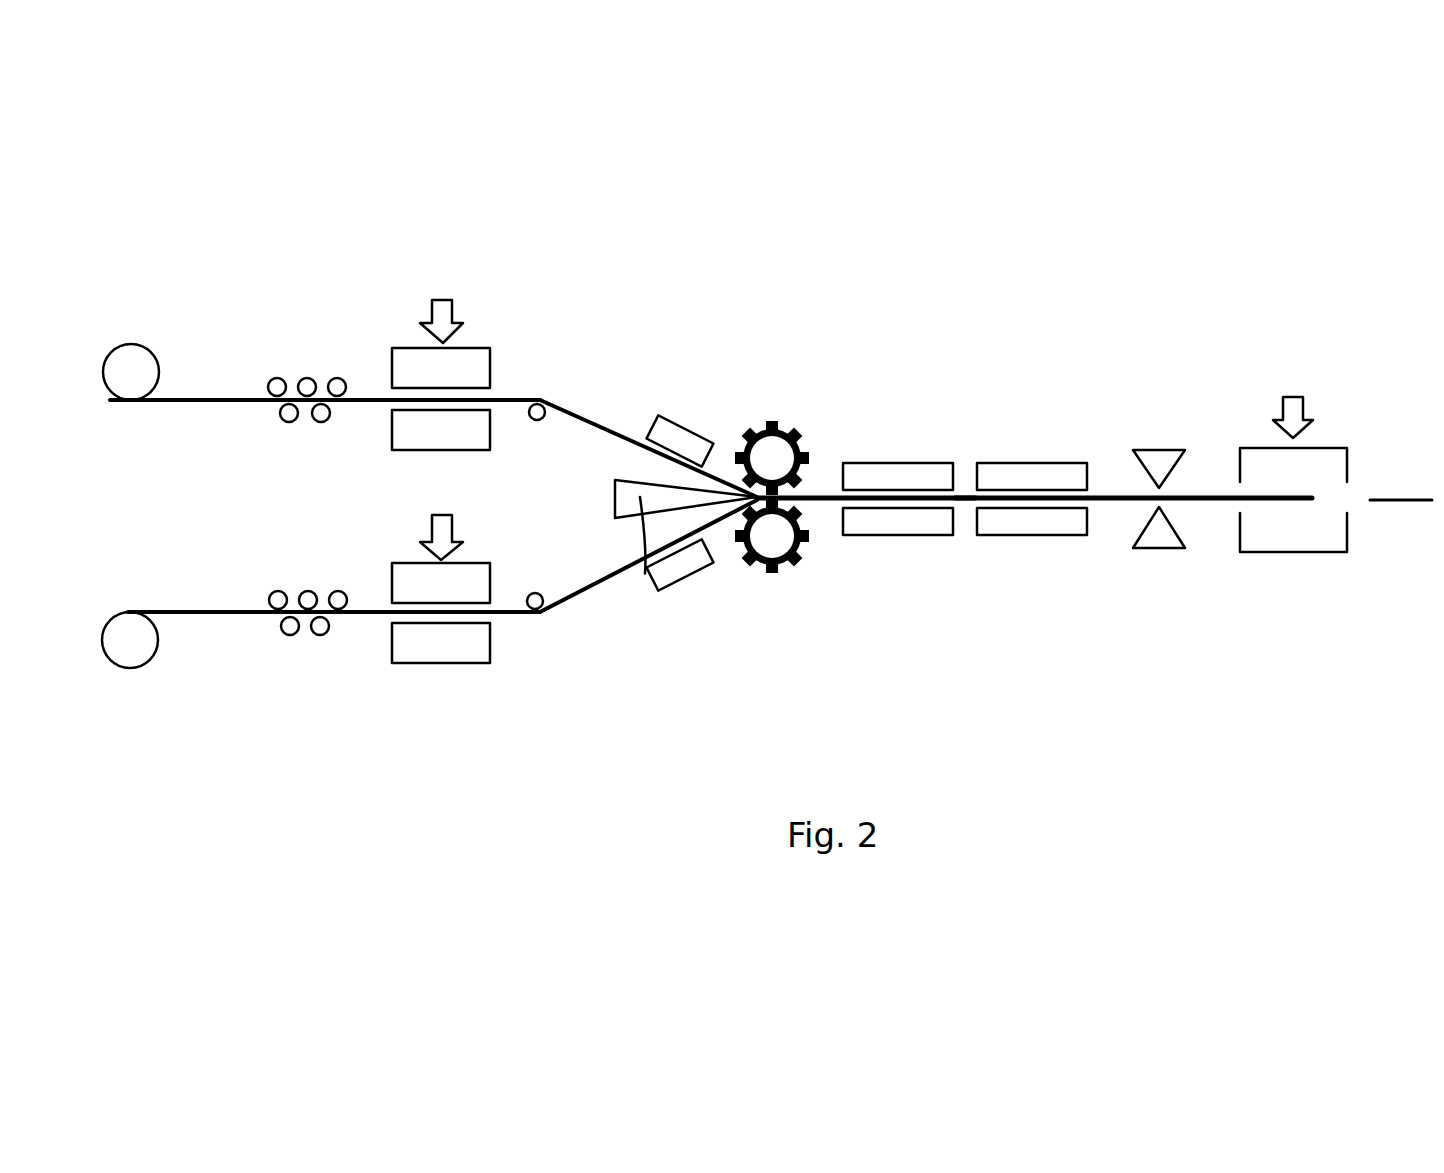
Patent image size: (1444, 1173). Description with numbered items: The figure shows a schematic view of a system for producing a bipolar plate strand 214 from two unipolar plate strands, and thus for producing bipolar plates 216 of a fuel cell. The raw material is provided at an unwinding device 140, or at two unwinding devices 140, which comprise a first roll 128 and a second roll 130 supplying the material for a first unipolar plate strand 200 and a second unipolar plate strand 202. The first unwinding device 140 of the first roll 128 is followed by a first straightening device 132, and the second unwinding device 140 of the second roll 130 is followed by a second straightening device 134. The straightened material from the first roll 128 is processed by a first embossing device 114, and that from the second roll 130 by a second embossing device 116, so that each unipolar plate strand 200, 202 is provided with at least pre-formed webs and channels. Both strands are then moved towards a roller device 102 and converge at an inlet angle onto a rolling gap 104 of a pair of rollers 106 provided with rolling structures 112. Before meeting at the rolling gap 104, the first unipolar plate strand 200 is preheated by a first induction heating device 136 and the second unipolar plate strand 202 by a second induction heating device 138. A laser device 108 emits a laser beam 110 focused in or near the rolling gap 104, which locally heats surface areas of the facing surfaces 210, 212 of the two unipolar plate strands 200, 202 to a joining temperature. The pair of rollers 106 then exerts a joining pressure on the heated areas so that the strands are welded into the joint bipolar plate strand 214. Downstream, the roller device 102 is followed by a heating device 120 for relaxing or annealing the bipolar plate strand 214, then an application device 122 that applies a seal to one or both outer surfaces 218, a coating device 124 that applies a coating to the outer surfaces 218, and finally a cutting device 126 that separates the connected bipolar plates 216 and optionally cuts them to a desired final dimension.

The roller device 102 is at (792, 524).
The rolling gap 104 is at (798, 507).
The pair of rollers 106 is at (770, 452).
The laser device 108 is at (628, 522).
The laser beam 110 is at (645, 574).
The rolling structures 112 is at (797, 570).
The first embossing device 114 is at (445, 360).
The second embossing device 116 is at (438, 655).
The heating device 120 is at (899, 527).
The application device 122 is at (1055, 527).
The coating device 124 is at (1160, 550).
The cutting device 126 is at (1285, 534).
The first roll 128 is at (143, 383).
The second roll 130 is at (143, 630).
The first straightening device 132 is at (307, 369).
The second straightening device 134 is at (303, 639).
The first induction heating device 136 is at (672, 423).
The second induction heating device 138 is at (683, 580).
The unwinding device 140 is at (135, 374).
The first unipolar plate strand 200 is at (587, 419).
The second unipolar plate strand 202 is at (532, 615).
The surface 210 is at (586, 421).
The surface 212 is at (580, 590).
The bipolar plate strand 214 is at (827, 492).
The bipolar plate 216 is at (1390, 503).
The outer surfaces 218 is at (967, 496).